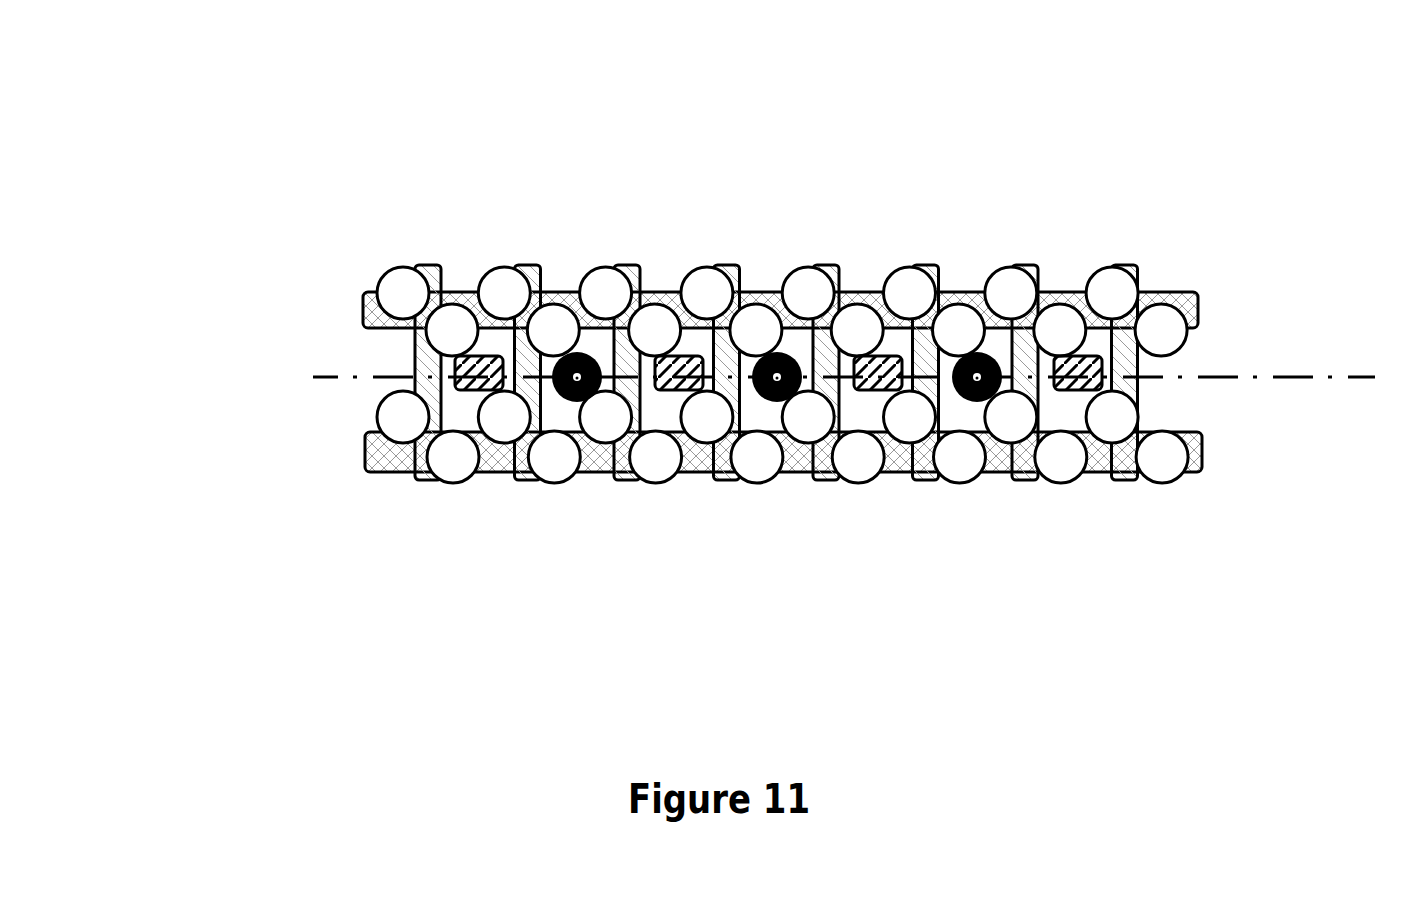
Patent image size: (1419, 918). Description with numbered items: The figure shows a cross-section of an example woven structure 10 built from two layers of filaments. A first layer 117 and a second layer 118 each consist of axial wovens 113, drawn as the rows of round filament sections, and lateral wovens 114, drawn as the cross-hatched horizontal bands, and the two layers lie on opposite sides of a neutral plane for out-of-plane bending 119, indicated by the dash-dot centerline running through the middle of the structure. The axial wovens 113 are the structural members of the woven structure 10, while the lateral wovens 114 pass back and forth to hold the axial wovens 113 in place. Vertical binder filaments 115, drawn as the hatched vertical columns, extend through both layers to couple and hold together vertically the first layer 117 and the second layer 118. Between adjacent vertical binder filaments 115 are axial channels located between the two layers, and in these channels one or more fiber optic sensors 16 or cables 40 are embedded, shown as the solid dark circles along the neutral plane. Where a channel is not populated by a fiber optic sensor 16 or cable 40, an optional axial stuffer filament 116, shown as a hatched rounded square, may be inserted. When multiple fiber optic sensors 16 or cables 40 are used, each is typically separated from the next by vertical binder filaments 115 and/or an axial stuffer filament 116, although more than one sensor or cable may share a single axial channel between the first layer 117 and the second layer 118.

The woven structure 10 is at (188, 192).
The axial wovens 113 is at (337, 215).
The lateral wovens 114 is at (360, 435).
The vertical binder filaments 115 is at (510, 475).
The axial stuffer filament 116 is at (1095, 350).
The first layer 117 is at (1213, 266).
The second layer 118 is at (1213, 407).
The neutral plane for out-of-plane bending 119 is at (1347, 386).
The fiber optic sensor 16 is at (604, 395).
The cable 40 is at (777, 487).